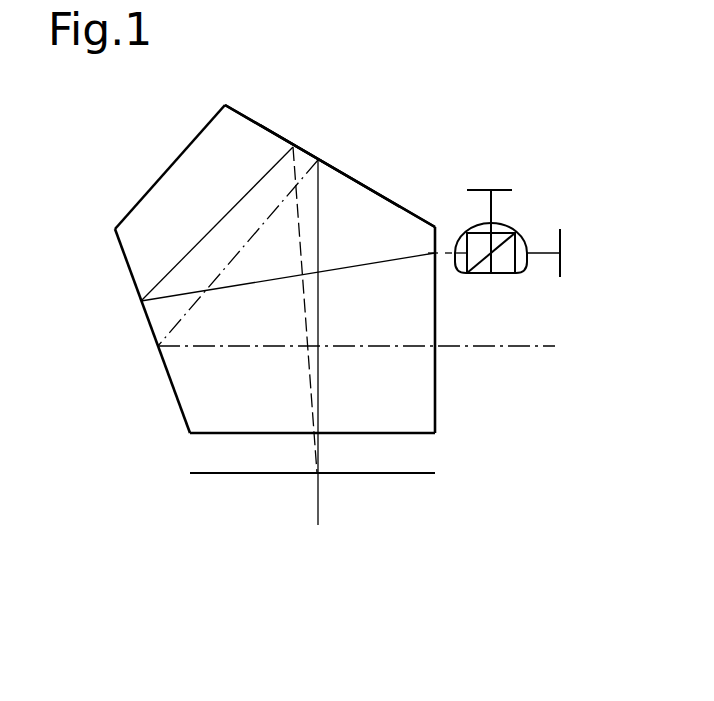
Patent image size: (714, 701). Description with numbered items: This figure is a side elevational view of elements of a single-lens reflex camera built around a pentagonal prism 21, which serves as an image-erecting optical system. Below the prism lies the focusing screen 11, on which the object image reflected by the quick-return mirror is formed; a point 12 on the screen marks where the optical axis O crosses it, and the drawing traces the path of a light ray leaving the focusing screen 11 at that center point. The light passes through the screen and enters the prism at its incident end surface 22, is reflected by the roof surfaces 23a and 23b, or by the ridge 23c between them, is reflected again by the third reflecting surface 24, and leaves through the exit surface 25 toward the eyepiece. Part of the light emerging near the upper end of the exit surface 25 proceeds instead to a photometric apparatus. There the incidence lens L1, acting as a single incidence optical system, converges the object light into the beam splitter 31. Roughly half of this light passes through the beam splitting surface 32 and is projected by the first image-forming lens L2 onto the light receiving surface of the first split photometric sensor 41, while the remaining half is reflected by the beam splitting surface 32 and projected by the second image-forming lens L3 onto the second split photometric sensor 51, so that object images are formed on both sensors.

The focusing screen 11 is at (427, 473).
The reference point on base 12 is at (317, 473).
The pentagonal prism 21 is at (293, 135).
The incident end surface 22 is at (413, 434).
The roof surface 23a is at (295, 145).
The roof surface 23b is at (337, 167).
The ridge 23c is at (370, 150).
The third reflecting surface 24 is at (134, 283).
The exit surface 25 is at (437, 358).
The beam splitter 31 is at (482, 273).
The beam splitting surface 32 is at (495, 273).
The first split photometric sensor 41 is at (562, 238).
The second split photometric sensor 51 is at (478, 190).
The incidence lens L1 is at (467, 237).
The first image-forming lens L2 is at (525, 268).
The second image-forming lens L3 is at (507, 227).
The optical axis O is at (317, 502).